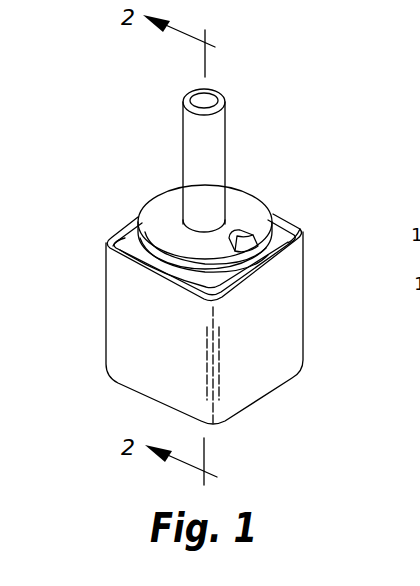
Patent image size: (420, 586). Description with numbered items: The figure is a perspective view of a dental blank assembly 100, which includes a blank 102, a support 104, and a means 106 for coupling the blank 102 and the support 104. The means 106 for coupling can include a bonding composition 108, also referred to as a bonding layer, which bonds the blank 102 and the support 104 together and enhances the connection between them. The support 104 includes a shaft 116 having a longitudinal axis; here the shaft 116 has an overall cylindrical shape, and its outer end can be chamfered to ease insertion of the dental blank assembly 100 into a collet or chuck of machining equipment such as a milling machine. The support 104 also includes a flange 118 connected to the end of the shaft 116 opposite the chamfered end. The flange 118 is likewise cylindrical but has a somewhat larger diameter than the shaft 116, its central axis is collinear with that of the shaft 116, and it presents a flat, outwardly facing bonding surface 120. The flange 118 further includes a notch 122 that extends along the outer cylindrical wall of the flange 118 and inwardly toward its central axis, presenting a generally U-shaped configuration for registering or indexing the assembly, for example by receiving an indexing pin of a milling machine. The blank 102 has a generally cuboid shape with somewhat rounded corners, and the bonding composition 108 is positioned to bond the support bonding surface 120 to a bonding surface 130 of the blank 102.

The dental blank assembly 100 is at (276, 97).
The blank 102 is at (288, 337).
The support 104 is at (237, 151).
The means for coupling 106 is at (118, 242).
The bonding composition 108 is at (173, 275).
The shaft 116 is at (190, 156).
The flange 118 is at (157, 212).
The bonding surface 120 is at (255, 282).
The notch 122 is at (244, 230).
The bonding surface 130 is at (280, 237).